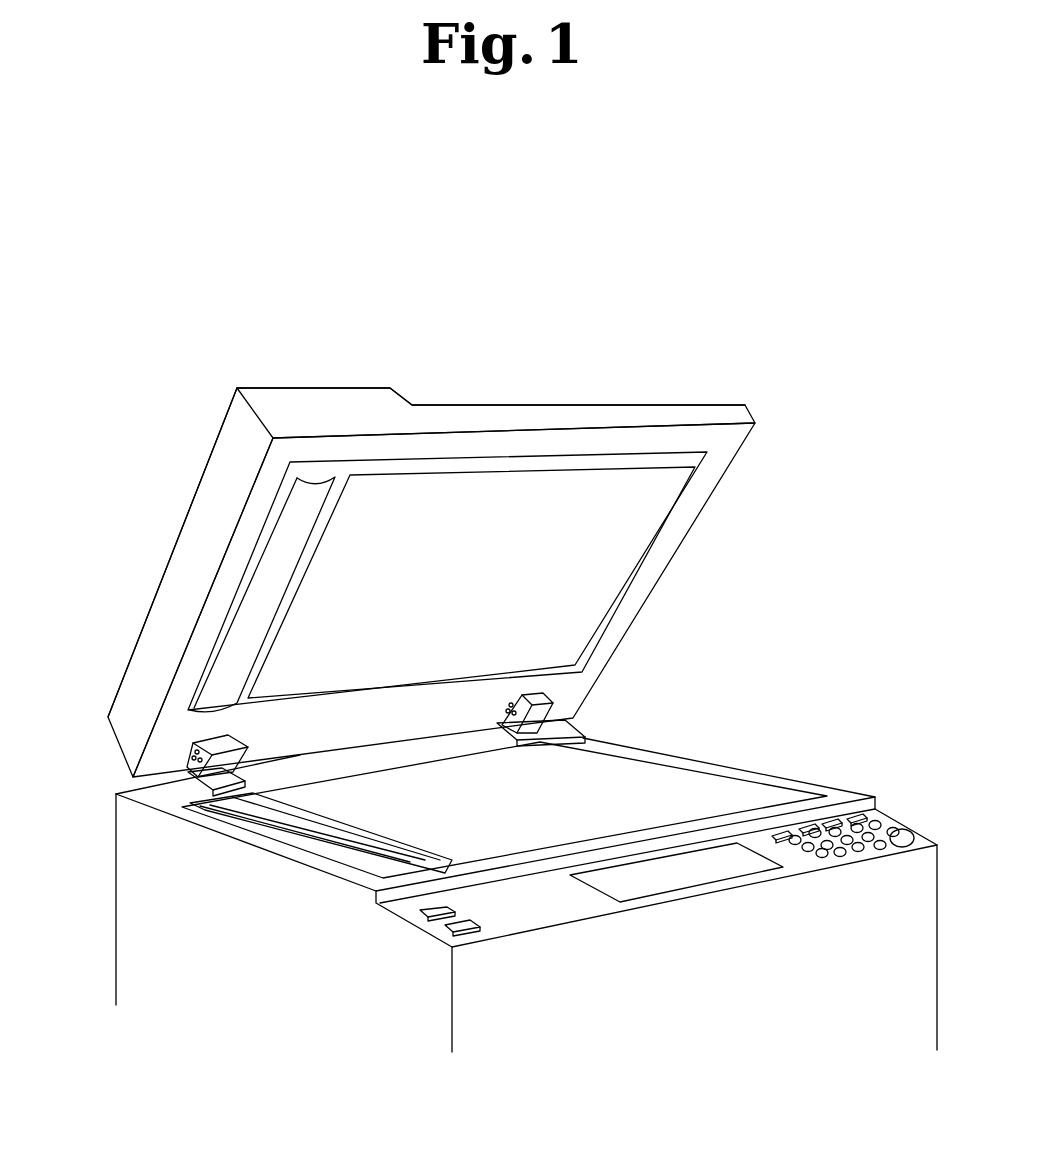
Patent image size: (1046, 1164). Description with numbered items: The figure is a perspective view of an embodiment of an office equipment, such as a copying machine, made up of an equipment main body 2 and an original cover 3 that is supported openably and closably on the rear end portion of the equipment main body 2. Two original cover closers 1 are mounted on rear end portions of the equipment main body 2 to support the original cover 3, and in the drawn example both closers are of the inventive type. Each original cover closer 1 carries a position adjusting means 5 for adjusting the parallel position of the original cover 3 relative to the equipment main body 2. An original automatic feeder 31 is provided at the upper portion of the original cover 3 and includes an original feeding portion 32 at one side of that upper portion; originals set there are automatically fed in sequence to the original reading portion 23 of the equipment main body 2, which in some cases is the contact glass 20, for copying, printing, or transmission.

The original cover closer 1 is at (565, 692).
The equipment main body 2 is at (827, 787).
The original cover 3 is at (725, 447).
The position adjusting means 5 is at (552, 738).
The contact glass 20 is at (702, 790).
The original reading portion 23 is at (355, 845).
The original automatic feeder 31 is at (205, 468).
The original feeding portion 32 is at (258, 395).